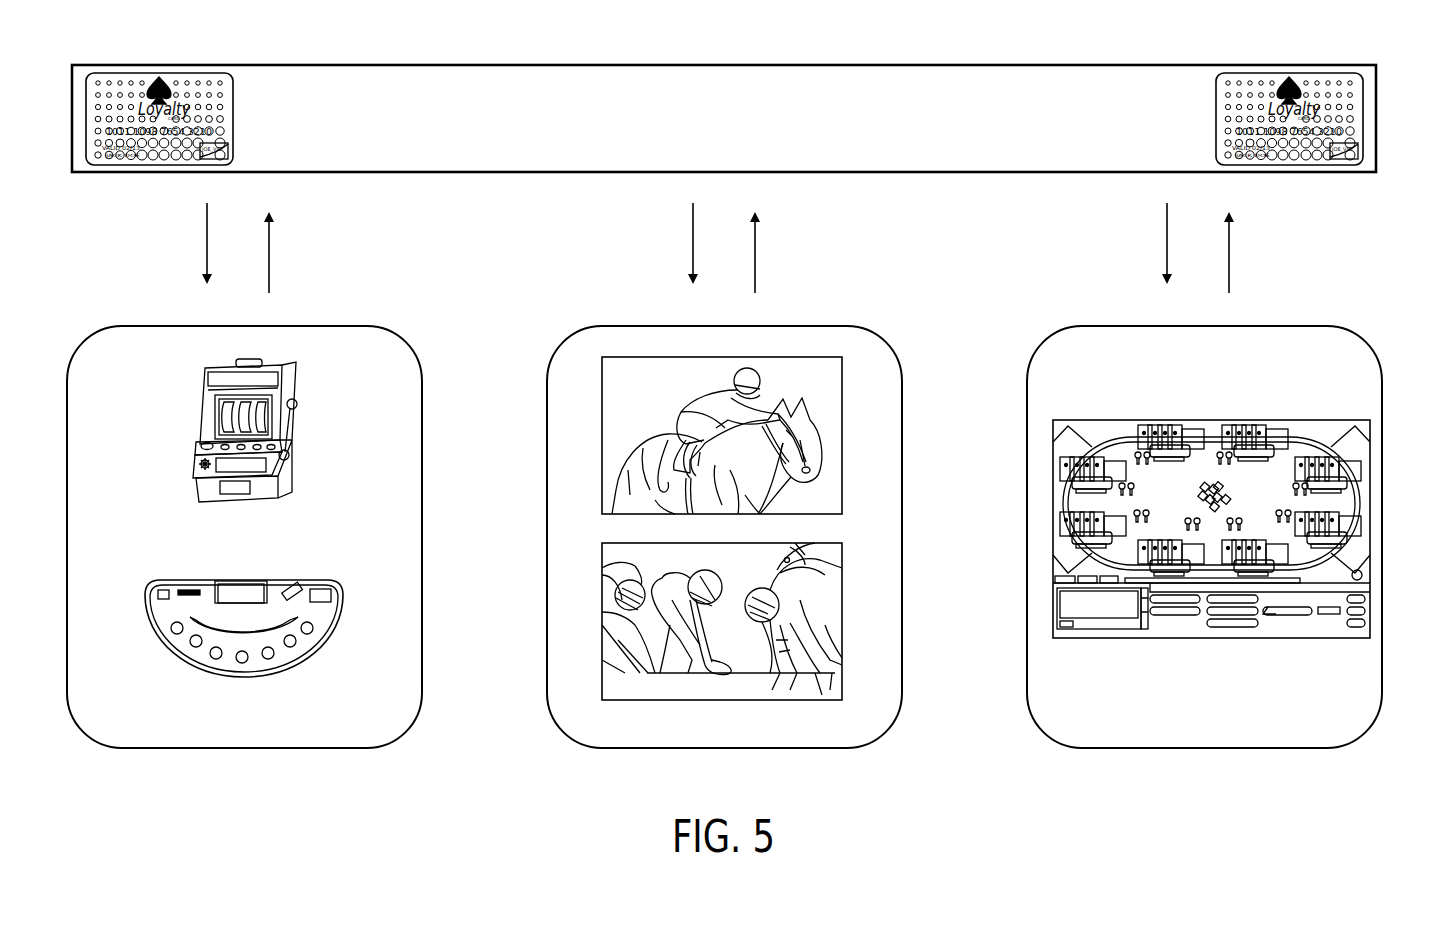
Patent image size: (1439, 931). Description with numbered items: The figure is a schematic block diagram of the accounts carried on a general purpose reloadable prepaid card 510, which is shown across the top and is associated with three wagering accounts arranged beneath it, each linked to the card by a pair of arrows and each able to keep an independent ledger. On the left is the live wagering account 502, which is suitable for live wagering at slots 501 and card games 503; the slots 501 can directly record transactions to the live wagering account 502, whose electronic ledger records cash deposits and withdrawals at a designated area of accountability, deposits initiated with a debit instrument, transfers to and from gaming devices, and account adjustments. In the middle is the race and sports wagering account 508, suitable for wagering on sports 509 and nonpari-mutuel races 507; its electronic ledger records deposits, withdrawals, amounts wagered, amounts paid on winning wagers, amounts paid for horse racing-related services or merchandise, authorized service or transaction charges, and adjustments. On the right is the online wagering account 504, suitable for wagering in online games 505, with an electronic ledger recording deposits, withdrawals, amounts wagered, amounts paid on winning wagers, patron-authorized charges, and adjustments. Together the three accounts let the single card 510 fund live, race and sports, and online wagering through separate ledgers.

The GPR prepaid card 510 is at (911, 80).
The slots 501 is at (200, 420).
The live wagering account 502 is at (410, 750).
The card games 503 is at (153, 634).
The online wagering account 504 is at (1384, 751).
The online games 505 is at (1371, 521).
The nonpari-mutuel races 507 is at (843, 432).
The race and sports wagering account 508 is at (898, 751).
The sports 509 is at (843, 610).